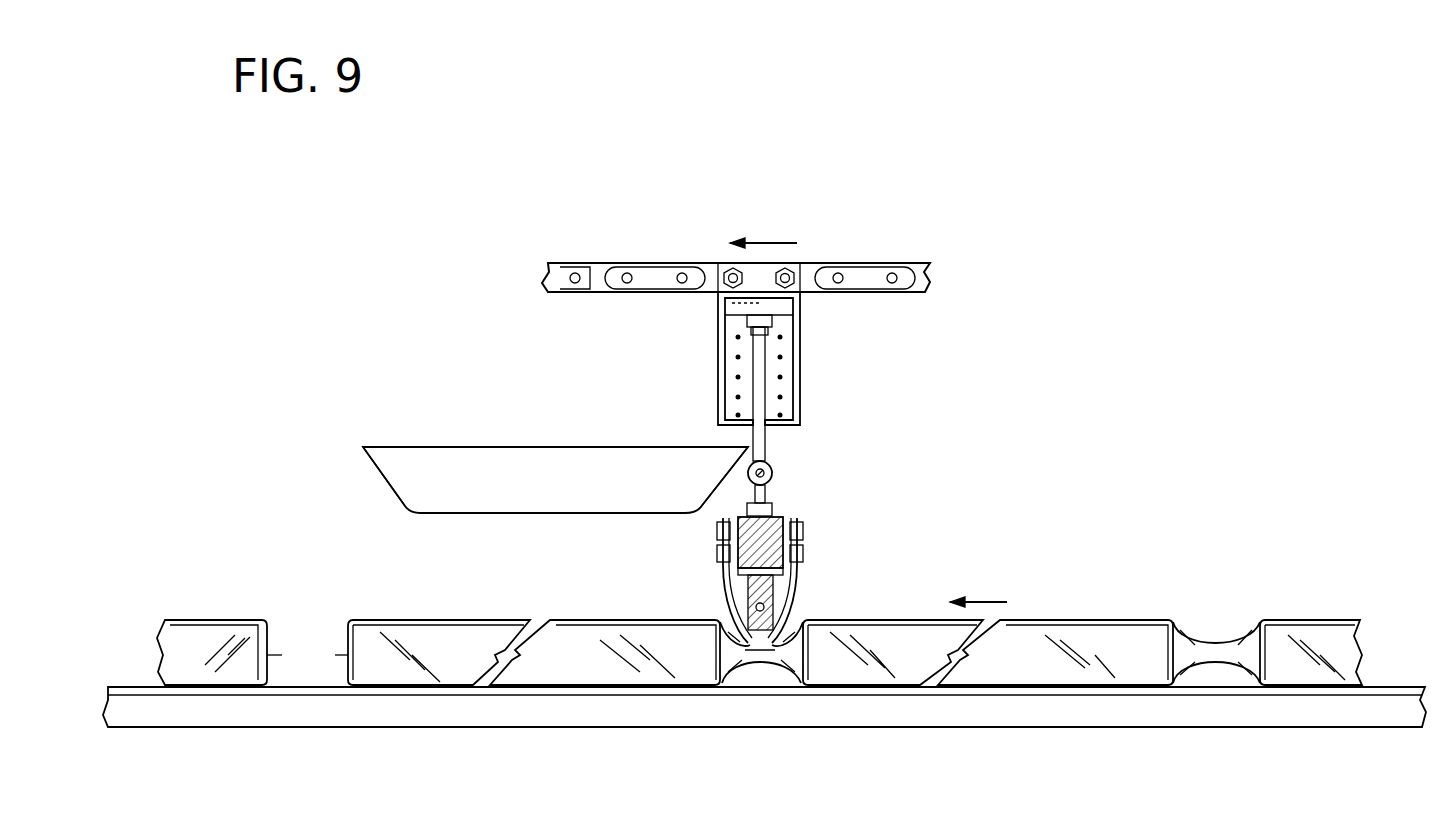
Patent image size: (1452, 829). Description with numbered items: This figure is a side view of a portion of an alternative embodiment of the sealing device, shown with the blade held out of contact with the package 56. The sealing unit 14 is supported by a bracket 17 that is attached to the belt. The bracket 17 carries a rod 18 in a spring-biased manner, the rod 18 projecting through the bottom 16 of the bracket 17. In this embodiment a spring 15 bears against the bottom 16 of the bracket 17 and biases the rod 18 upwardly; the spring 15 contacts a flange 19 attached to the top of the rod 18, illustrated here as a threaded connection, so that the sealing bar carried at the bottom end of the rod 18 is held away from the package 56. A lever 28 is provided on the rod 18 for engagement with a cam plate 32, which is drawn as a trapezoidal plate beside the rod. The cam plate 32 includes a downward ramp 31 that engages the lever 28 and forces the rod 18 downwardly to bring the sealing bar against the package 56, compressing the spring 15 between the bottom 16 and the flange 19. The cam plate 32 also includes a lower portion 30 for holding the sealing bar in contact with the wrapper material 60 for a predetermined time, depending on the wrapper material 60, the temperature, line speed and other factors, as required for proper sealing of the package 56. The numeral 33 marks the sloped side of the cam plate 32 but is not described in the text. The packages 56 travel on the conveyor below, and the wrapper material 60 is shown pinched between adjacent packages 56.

The flange 19 is at (783, 307).
The bracket 17 is at (800, 313).
The spring 15 is at (790, 356).
The bottom 16 is at (727, 433).
The rod 18 is at (762, 440).
The lever 28 is at (773, 473).
The sealing unit 14 is at (838, 574).
The cam plate 32 is at (443, 473).
The tray sidewall 33 is at (388, 478).
The lower portion 30 is at (558, 505).
The downward ramp 31 is at (726, 487).
The package 56 is at (863, 670).
The wrapper material 60 is at (747, 663).